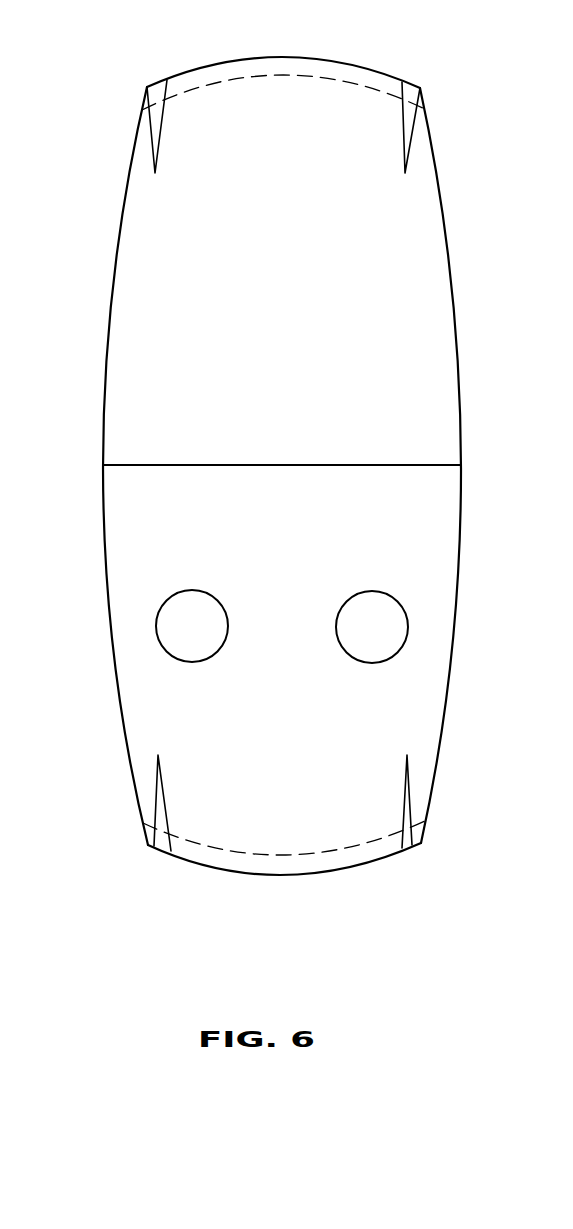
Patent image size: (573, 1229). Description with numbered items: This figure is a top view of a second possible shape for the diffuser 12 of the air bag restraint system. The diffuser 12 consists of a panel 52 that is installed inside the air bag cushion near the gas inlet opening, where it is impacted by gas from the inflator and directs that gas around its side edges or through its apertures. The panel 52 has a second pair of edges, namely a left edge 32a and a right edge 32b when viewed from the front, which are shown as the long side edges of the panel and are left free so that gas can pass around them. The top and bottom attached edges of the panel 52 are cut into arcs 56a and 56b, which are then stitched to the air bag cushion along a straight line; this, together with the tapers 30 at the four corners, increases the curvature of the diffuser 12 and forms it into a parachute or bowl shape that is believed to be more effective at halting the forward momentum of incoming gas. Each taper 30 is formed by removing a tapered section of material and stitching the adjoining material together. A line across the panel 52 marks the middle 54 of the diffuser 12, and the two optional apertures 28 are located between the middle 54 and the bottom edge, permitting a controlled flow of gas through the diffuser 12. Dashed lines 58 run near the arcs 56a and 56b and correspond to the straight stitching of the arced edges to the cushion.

The diffuser 12 is at (450, 206).
The apertures 28 is at (197, 605).
The tapers 30 is at (158, 82).
The left edge 32a is at (103, 413).
The right edge 32b is at (458, 360).
The panel 52 is at (427, 256).
The middle 54 is at (463, 465).
The arc 56a is at (255, 57).
The arc 56b is at (317, 877).
The fold lines 58 is at (347, 80).